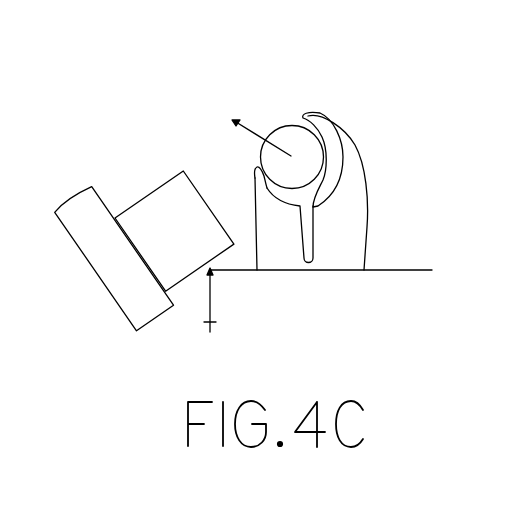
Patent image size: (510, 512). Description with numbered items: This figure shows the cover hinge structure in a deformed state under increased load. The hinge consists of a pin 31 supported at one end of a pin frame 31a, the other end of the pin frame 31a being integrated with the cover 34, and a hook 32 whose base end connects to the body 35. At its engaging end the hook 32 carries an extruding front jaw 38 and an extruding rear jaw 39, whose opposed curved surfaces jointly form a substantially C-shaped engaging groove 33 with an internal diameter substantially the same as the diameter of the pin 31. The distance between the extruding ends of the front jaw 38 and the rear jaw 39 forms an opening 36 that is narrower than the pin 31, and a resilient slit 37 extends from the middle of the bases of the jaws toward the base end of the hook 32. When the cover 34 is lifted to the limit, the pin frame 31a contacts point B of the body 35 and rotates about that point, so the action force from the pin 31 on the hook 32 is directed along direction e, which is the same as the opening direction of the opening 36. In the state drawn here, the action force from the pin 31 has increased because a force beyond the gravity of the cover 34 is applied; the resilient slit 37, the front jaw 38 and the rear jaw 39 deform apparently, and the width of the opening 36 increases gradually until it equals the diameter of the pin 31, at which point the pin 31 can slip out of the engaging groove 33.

The pin 31 is at (318, 150).
The pin frame 31a is at (153, 208).
The hook 32 is at (358, 257).
The engaging groove 33 is at (335, 175).
The cover 34 is at (87, 193).
The body 35 is at (210, 322).
The opening 36 is at (275, 122).
The resilient slit 37 is at (312, 228).
The front jaw 38 is at (323, 122).
The rear jaw 39 is at (255, 183).